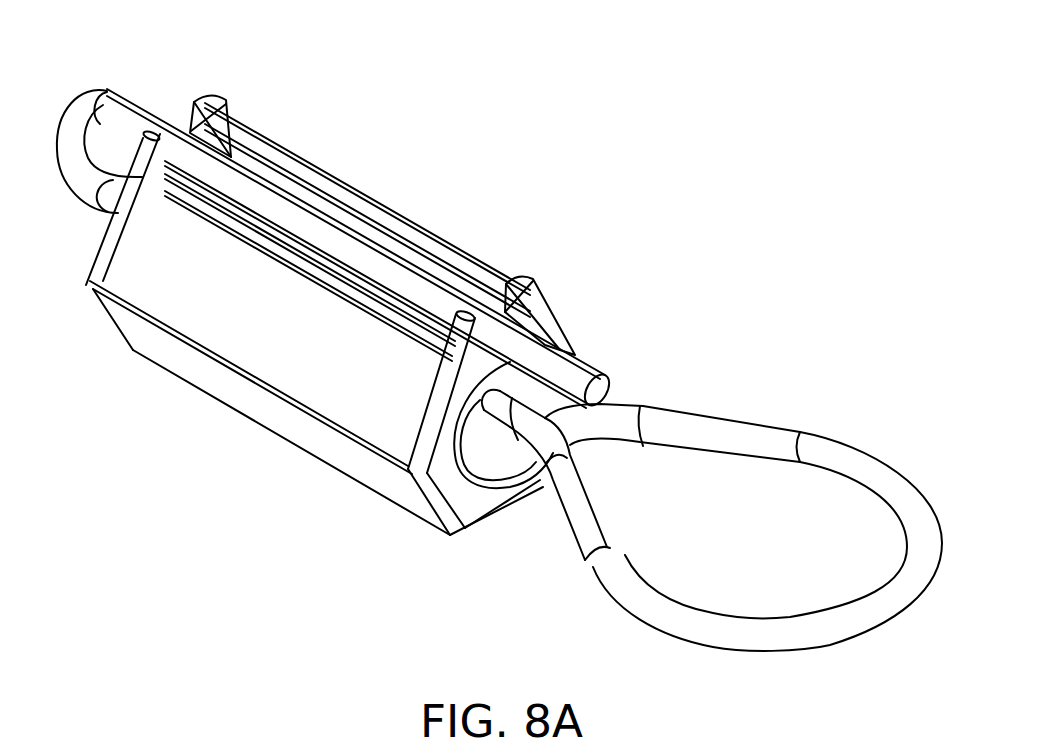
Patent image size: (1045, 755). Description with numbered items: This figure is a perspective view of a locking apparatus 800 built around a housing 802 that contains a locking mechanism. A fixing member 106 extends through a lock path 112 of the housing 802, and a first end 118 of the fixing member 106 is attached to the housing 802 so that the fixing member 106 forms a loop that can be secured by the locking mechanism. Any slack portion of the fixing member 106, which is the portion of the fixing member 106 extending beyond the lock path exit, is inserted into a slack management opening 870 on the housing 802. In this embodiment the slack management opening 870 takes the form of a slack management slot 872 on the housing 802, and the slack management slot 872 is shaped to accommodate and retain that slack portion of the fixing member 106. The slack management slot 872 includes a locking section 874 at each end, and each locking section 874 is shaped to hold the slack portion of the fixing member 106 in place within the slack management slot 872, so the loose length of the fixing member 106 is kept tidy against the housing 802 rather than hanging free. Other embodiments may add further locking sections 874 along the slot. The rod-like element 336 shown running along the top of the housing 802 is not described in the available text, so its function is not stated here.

The locking apparatus 800 is at (185, 80).
The housing 802 is at (167, 283).
The slack management opening 870 is at (447, 208).
The slack management slot 872 is at (303, 247).
The locking section 874 is at (233, 111).
The rod 336 is at (597, 374).
The first end 118 is at (610, 418).
The lock path 112 is at (598, 478).
The fixing member 106 is at (847, 446).